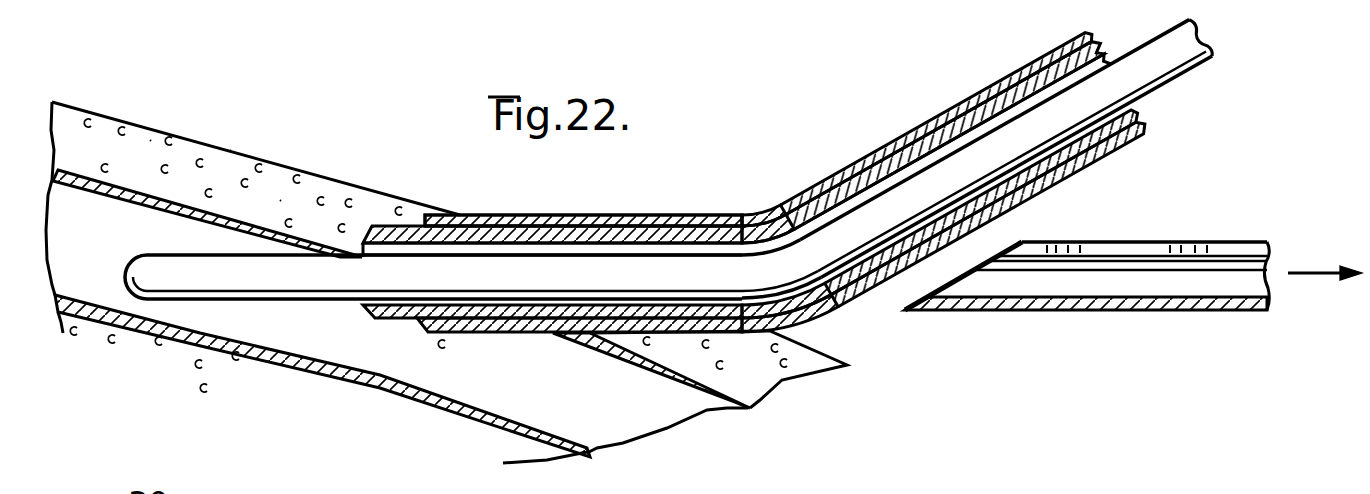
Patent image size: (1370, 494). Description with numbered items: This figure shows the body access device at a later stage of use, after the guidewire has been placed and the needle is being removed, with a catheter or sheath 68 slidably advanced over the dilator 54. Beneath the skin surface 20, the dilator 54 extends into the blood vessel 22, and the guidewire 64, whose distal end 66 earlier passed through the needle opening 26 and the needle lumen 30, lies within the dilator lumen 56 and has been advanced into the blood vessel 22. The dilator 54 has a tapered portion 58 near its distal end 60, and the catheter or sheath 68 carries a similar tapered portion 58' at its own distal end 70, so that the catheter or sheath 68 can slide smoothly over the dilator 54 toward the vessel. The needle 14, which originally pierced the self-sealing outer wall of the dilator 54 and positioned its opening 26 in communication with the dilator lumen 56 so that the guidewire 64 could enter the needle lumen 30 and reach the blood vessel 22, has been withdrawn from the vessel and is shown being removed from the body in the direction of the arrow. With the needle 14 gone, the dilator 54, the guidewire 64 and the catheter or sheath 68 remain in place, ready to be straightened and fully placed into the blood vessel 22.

The needle 14 is at (1112, 311).
The skin surface 20 is at (333, 181).
The blood vessel 22 is at (300, 366).
The needle opening 26 is at (1172, 243).
The needle lumen 30 is at (1204, 280).
The dilator 54 is at (583, 228).
The dilator lumen 56 is at (648, 250).
The tapered portion of the dilator 58 is at (578, 193).
The tapered portion of the catheter 58' is at (605, 190).
The distal end of the dilator 60 is at (367, 323).
The guidewire 64 is at (1163, 82).
The distal end of the guidewire 66 is at (128, 270).
The catheter or sheath 68 is at (923, 120).
The distal end of the catheter 70 is at (419, 332).